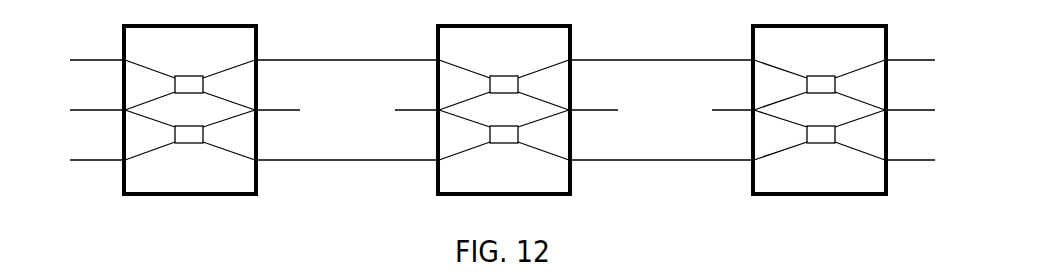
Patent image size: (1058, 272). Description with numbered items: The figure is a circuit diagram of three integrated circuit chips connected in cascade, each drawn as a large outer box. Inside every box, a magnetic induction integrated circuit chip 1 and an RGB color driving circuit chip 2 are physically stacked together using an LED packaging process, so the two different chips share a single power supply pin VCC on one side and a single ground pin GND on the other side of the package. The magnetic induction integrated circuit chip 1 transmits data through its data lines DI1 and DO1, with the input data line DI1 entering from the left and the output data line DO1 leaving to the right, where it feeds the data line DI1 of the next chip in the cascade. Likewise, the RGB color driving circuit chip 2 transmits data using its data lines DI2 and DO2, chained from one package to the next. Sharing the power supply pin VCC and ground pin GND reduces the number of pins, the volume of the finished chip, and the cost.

The magnetic induction integrated circuit chip 1 is at (505, 84).
The RGB color driving circuit chip 2 is at (505, 134).
The data line DI1 is at (401, 53).
The data line DO1 is at (633, 53).
The data line DI2 is at (401, 153).
The data line DO2 is at (633, 153).
The power supply pin VCC is at (401, 103).
The ground pin GND is at (608, 103).